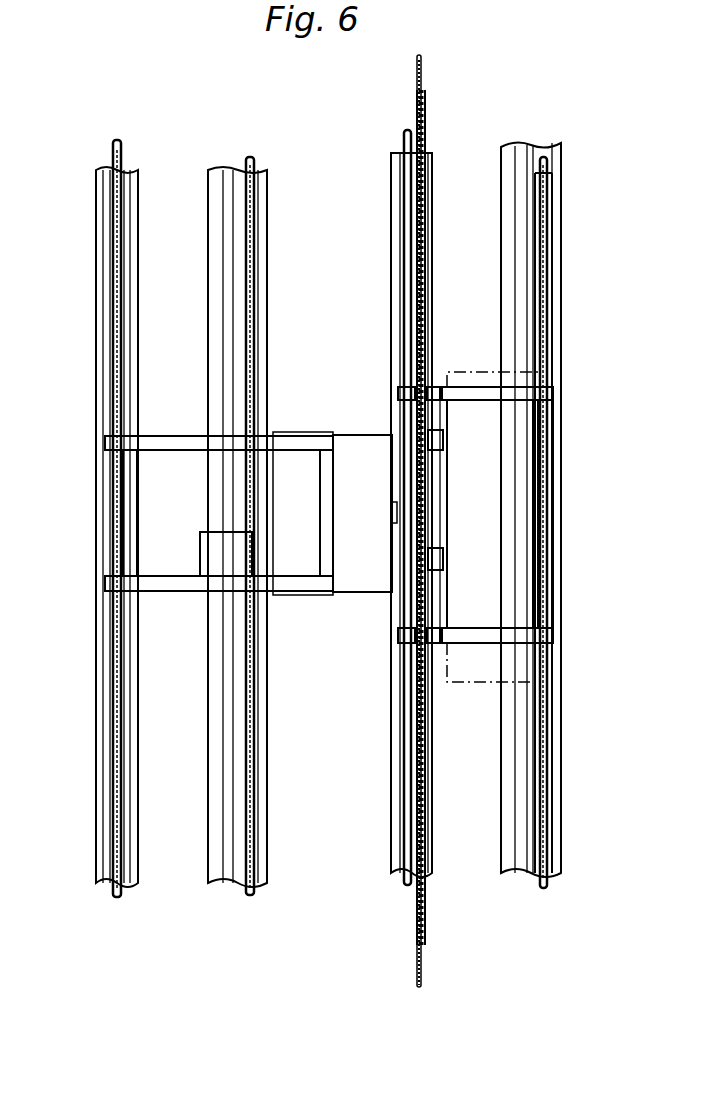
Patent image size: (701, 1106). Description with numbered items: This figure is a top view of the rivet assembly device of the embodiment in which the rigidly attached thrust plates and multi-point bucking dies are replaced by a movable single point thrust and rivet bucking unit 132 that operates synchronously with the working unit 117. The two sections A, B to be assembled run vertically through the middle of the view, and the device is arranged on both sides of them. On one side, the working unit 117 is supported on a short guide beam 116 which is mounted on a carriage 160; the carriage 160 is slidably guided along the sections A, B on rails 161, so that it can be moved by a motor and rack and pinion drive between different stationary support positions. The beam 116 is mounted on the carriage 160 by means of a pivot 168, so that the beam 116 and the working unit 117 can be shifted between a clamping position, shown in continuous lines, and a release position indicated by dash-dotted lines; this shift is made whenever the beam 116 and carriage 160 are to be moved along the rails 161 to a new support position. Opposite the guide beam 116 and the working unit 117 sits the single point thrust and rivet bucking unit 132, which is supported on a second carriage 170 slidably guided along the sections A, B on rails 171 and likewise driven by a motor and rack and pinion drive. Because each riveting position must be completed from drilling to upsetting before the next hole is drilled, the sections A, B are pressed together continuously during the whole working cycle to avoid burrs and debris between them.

The rails 171 is at (118, 282).
The rails 161 is at (408, 222).
The carriage 170 is at (176, 445).
The single point thrust and rivet bucking unit 132 is at (352, 449).
The guide beam 116 is at (428, 422).
The pivot 168 is at (432, 393).
The carriage 160 is at (545, 604).
The working unit 117 is at (517, 446).
The section A is at (425, 110).
The section B is at (417, 90).